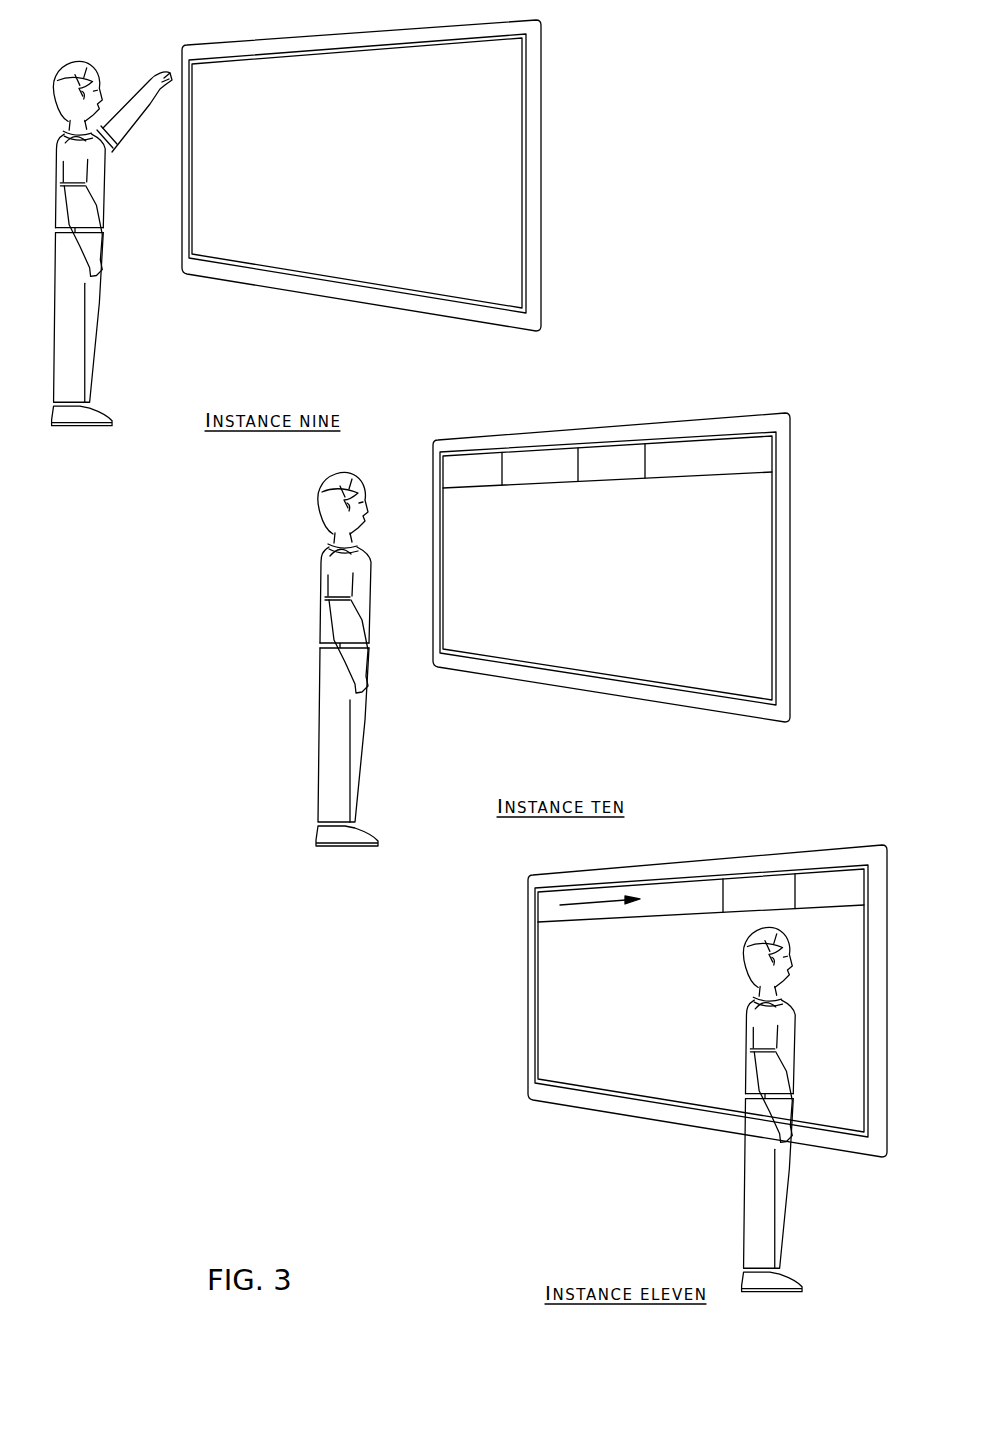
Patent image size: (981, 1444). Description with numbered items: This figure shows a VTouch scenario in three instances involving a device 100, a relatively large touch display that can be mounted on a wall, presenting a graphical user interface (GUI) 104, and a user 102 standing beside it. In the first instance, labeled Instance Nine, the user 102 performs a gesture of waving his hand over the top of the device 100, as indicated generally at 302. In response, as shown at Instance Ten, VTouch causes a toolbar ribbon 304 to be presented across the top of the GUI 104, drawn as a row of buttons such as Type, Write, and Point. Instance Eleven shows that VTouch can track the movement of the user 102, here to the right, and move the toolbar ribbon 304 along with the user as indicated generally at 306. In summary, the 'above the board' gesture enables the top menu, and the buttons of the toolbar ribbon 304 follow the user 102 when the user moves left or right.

The device 100 is at (193, 45).
The user 102 is at (85, 390).
The graphical user interface (GUI) 104 is at (345, 262).
The gesture of waving hand over top of device 302 is at (165, 138).
The toolbar ribbon 304 is at (645, 490).
The movement of toolbar ribbon with user 306 is at (605, 904).